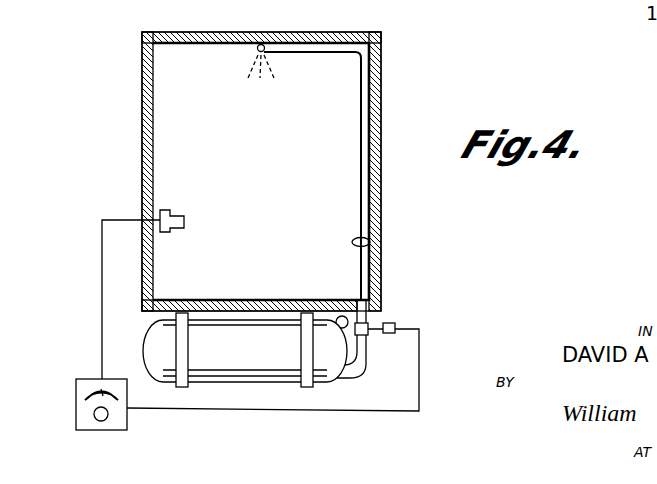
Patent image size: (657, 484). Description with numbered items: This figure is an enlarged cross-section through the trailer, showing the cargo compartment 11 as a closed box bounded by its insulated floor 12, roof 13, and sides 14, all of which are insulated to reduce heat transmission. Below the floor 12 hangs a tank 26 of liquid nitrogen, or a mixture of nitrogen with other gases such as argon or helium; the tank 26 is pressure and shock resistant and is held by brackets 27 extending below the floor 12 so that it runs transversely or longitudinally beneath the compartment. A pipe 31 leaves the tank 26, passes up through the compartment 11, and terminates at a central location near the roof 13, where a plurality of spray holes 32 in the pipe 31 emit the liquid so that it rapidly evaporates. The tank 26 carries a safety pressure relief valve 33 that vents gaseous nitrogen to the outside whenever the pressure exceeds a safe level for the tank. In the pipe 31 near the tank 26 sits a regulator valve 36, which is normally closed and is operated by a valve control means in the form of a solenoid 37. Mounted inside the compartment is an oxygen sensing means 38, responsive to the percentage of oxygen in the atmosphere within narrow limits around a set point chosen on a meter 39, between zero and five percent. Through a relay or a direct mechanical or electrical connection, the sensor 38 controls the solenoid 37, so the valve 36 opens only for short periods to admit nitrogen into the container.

The cargo compartment 11 is at (261, 158).
The floor 12 is at (226, 262).
The roof 13 is at (190, 33).
The sides 14 is at (148, 172).
The tank 26 is at (247, 376).
The brackets 27 is at (305, 343).
The pipe 31 is at (370, 243).
The spray holes 32 is at (264, 58).
The safety pressure relief valve 33 is at (334, 308).
The regulator valve 36 is at (370, 323).
The solenoid 37 is at (395, 326).
The oxygen sensing means 38 is at (167, 230).
The meter 39 is at (83, 403).